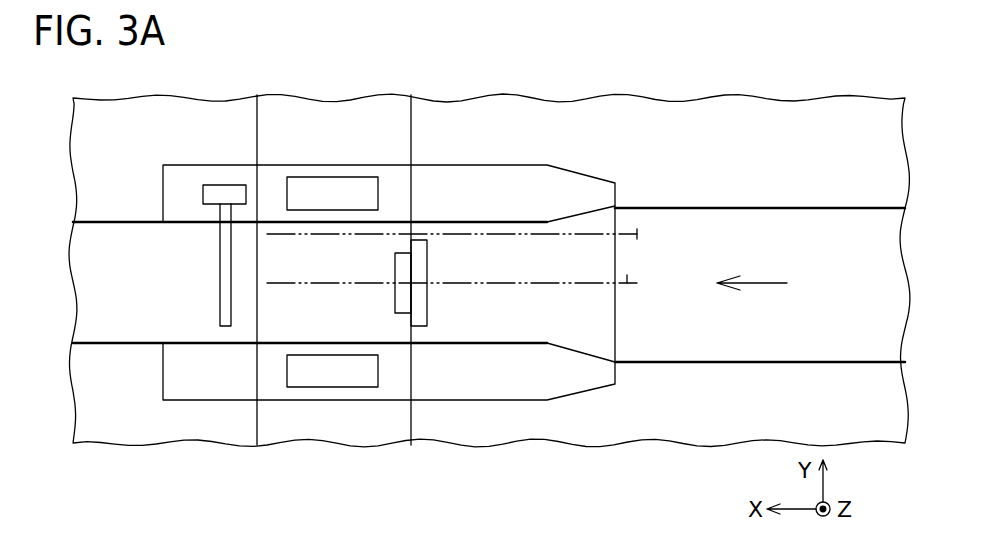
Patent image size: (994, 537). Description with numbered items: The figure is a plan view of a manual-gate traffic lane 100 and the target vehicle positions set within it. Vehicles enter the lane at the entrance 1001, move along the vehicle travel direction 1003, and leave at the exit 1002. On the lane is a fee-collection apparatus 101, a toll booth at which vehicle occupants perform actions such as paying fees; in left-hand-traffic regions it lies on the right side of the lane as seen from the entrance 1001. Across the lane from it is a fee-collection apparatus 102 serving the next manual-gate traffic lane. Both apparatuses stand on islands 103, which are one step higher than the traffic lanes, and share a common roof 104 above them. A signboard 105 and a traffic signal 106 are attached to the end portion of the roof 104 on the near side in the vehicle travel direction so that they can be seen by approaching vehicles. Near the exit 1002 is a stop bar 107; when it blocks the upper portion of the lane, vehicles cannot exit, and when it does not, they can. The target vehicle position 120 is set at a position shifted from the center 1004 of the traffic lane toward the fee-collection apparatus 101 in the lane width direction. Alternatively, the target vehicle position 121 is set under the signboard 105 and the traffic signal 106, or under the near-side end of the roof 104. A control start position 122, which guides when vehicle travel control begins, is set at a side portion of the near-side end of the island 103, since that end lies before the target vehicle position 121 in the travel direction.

The manual-gate traffic lane 100 is at (650, 247).
The fee-collection apparatus 101 is at (331, 183).
The fee-collection apparatus 102 is at (332, 365).
The island 103 is at (582, 185).
The roof 104 is at (257, 127).
The signboard 105 is at (427, 316).
The traffic signal 106 is at (403, 277).
The stop bar 107 is at (220, 288).
The target vehicle position 120 is at (630, 237).
The target vehicle position 121 is at (411, 232).
The control start position 122 is at (615, 309).
The entrance 1001 is at (895, 255).
The exit 1002 is at (86, 257).
The vehicle travel direction 1003 is at (757, 285).
The center of the traffic lane 1004 is at (627, 283).